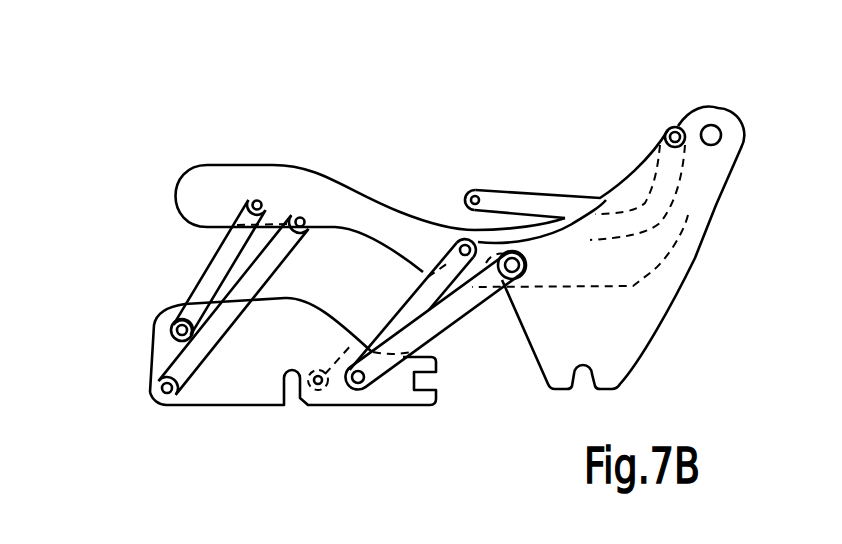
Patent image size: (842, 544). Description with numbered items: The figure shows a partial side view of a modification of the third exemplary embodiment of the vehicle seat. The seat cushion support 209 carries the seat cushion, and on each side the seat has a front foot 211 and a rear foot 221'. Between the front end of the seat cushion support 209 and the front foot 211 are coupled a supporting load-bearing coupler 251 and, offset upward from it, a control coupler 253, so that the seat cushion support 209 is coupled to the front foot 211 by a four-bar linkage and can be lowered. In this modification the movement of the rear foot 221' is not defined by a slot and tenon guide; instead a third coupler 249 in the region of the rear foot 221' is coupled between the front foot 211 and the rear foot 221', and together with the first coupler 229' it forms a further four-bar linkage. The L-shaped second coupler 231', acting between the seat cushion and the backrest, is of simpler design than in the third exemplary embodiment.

The seat cushion support 209 is at (322, 193).
The front foot 211 is at (238, 382).
The rear foot 221' is at (636, 259).
The first coupler 229' is at (443, 370).
The second coupler 231' is at (566, 131).
The third coupler 249 is at (394, 314).
The load-bearing coupler 251 is at (258, 272).
The control coupler 253 is at (217, 268).